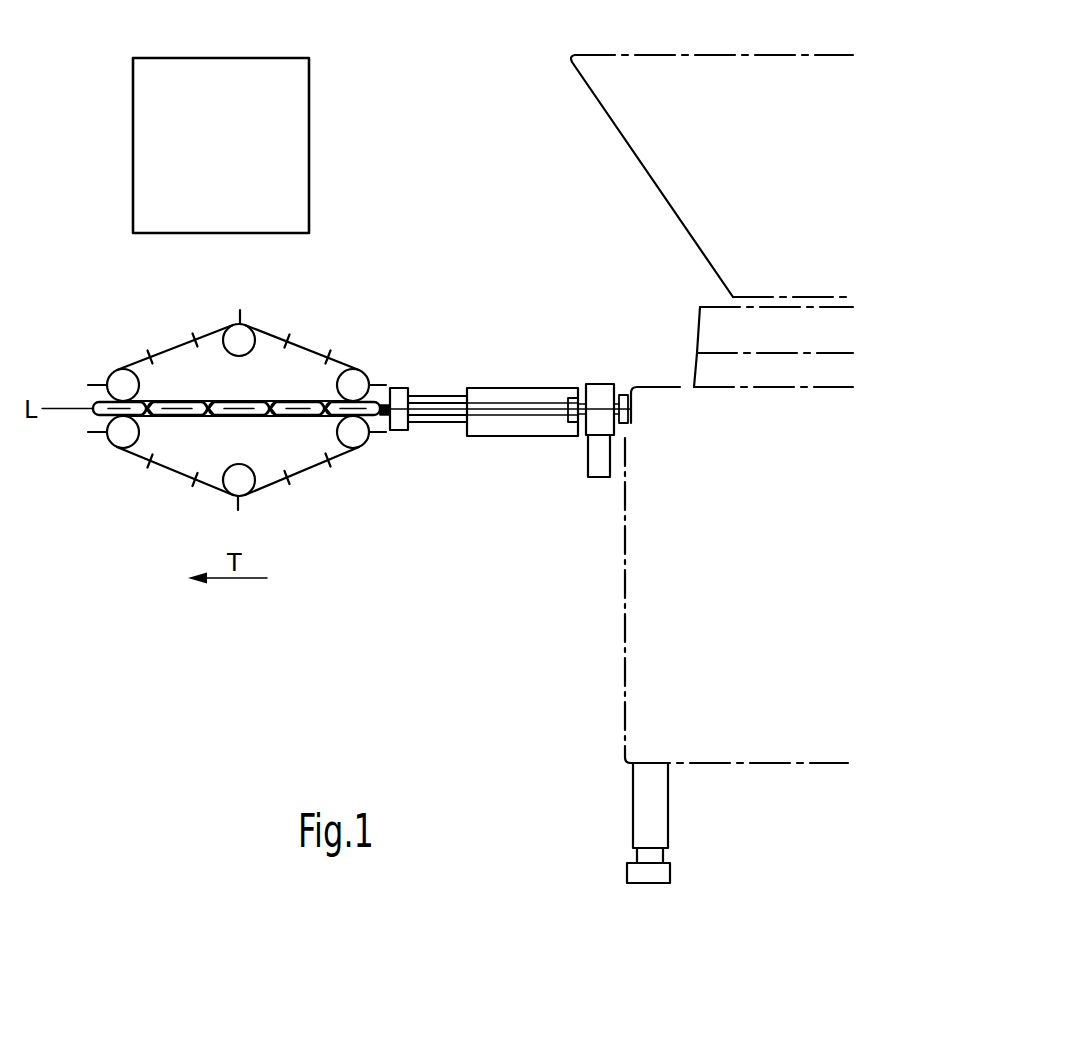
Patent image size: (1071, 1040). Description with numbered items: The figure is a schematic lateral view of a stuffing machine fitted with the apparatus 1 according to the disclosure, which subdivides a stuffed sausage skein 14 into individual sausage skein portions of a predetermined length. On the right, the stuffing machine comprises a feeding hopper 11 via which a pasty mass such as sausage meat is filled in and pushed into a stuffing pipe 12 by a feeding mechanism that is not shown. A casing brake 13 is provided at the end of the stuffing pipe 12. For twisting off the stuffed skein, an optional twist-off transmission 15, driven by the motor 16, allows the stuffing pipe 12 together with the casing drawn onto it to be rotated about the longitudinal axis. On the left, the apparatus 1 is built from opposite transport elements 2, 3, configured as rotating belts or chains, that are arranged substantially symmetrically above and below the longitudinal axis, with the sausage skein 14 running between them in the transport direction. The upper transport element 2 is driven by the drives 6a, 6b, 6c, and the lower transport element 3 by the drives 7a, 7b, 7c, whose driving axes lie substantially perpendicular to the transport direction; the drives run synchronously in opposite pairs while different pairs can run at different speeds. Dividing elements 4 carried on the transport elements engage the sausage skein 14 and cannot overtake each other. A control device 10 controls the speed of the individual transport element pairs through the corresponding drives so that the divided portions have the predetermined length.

The apparatus 1 is at (113, 318).
The transport element 2 is at (195, 388).
The transport element 3 is at (195, 453).
The dividing element 4 is at (194, 336).
The drive 6a is at (353, 380).
The drive 6b is at (243, 330).
The drive 6c is at (123, 382).
The drive 7a is at (353, 437).
The drive 7b is at (243, 487).
The drive 7c is at (115, 437).
The control device 10 is at (311, 135).
The feeding hopper 11 is at (612, 126).
The stuffing pipe 12 is at (503, 388).
The casing brake 13 is at (402, 387).
The stuffed sausage skein 14 is at (387, 382).
The twist-off transmission 15 is at (600, 385).
The motor 16 is at (587, 467).